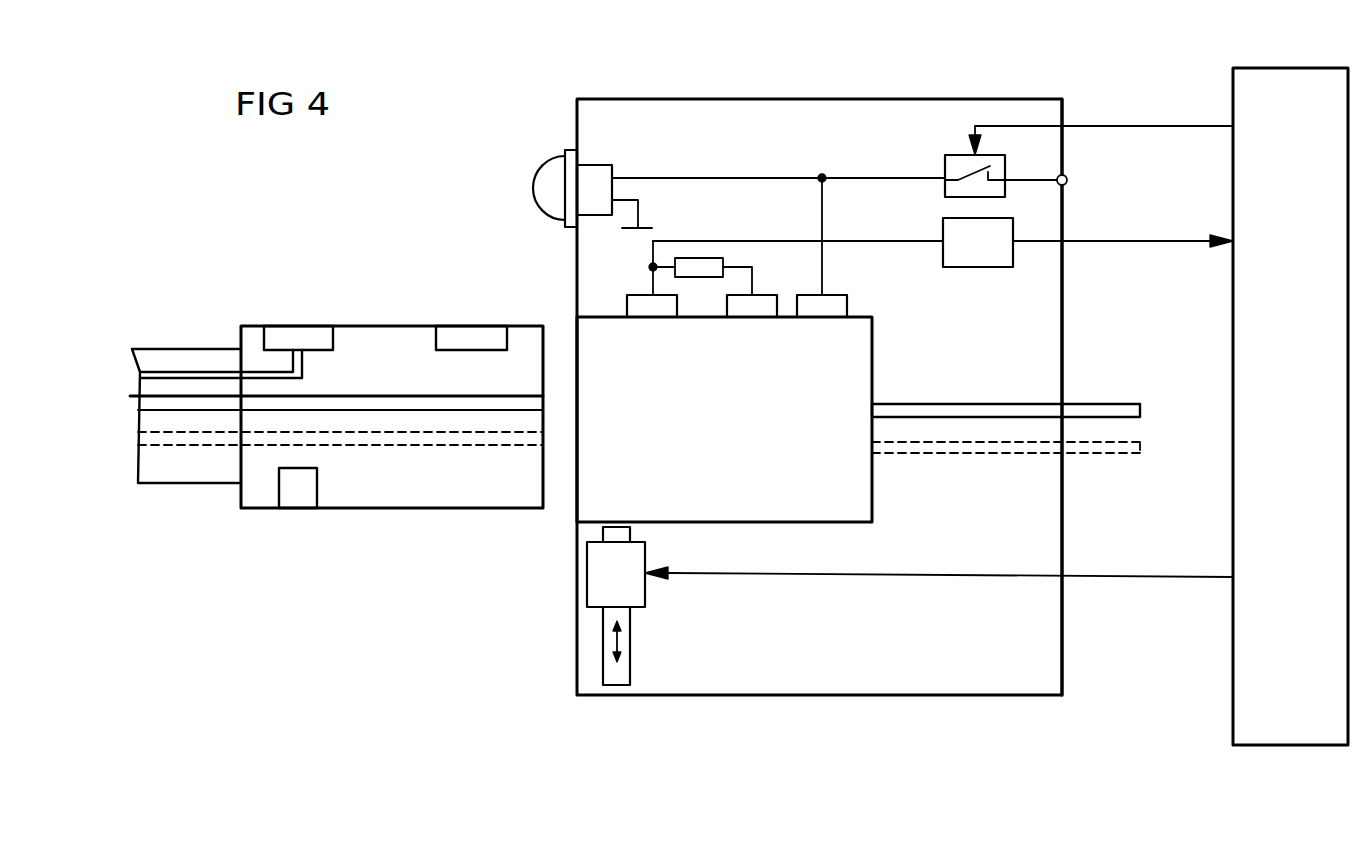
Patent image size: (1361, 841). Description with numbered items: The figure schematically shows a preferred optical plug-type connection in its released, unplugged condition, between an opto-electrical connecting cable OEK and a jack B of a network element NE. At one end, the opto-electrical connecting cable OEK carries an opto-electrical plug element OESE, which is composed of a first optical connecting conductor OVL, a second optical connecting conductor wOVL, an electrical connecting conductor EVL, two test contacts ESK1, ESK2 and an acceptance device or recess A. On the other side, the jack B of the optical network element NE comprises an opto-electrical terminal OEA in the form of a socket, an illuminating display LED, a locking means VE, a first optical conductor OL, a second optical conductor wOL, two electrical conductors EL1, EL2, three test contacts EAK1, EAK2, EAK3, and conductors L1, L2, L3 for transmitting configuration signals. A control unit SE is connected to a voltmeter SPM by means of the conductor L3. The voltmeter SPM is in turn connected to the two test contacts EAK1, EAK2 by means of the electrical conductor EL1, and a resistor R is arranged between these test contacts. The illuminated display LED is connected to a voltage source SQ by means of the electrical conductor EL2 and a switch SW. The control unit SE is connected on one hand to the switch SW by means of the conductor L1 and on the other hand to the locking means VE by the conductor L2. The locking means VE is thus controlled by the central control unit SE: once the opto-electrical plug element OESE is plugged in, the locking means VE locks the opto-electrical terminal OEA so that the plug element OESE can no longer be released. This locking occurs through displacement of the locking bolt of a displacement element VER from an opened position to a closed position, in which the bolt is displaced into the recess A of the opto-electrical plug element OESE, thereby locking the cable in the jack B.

The network element NE is at (782, 725).
The jack B is at (1062, 628).
The opto-electrical terminal OEA is at (872, 503).
The control unit SE is at (1233, 318).
The illuminating display LED is at (533, 188).
The second electrical conductor EL2 is at (653, 176).
The first electrical conductor EL1 is at (907, 244).
The resistor R is at (700, 257).
The first test contact EAK1 is at (650, 318).
The second test contact EAK2 is at (752, 318).
The third test contact EAK3 is at (828, 318).
The switch SW is at (945, 168).
The voltage source SQ is at (1066, 185).
The first conductor L1 is at (1163, 126).
The third conductor L3 is at (1163, 243).
The voltmeter SPM is at (994, 268).
The first optical conductor OL is at (1105, 403).
The second optical conductor wOL is at (1107, 455).
The second conductor L2 is at (1183, 576).
The locking means VE is at (645, 592).
The displacement element VER is at (630, 650).
The opto-electrical plug element OESE is at (257, 492).
The first test contact ESK1 is at (300, 330).
The second test contact ESK2 is at (473, 328).
The recess A is at (298, 495).
The opto-electrical connecting cable OEK is at (180, 473).
The electrical connecting conductor EVL is at (188, 368).
The first optical connecting conductor OVL is at (130, 396).
The second optical connecting conductor wOVL is at (138, 440).